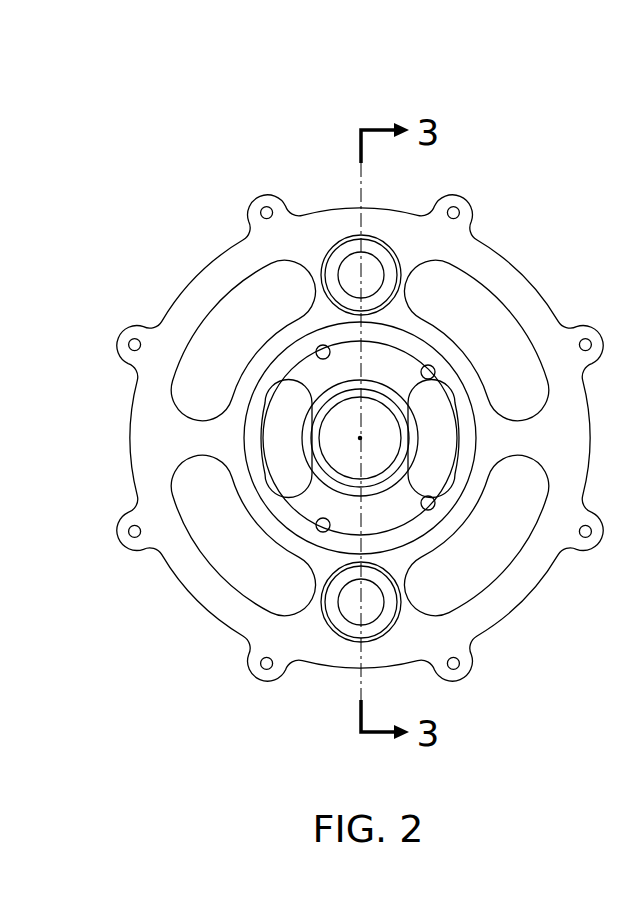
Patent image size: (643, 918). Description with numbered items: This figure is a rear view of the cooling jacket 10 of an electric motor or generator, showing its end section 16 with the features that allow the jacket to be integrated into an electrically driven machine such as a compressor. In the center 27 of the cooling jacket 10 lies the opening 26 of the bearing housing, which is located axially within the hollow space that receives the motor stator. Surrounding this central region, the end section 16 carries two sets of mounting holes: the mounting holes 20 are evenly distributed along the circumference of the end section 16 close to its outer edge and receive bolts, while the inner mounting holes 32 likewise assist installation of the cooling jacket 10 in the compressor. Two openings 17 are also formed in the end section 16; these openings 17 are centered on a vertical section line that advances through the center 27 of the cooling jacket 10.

The cooling jacket 10 is at (210, 172).
The end section 16 is at (495, 272).
The openings 17 is at (350, 262).
The mounting holes 20 is at (585, 538).
The opening of the bearing housing 26 is at (383, 417).
The center 27 is at (362, 438).
The mounting holes 32 is at (318, 348).